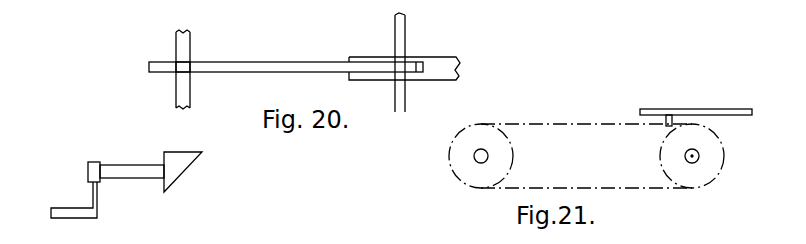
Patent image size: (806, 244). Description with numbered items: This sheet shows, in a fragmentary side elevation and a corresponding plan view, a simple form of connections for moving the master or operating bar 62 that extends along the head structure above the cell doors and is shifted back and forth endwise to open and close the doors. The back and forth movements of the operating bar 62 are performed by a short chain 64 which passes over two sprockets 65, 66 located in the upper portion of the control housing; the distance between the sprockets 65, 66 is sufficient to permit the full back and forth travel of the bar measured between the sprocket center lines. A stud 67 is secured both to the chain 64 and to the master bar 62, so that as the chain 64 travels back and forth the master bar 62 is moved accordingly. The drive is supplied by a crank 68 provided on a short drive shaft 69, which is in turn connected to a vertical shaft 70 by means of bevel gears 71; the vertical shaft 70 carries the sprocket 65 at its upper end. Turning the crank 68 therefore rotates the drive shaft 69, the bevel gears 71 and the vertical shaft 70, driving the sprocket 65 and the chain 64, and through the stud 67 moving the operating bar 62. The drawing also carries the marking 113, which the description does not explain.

In FIG. 20, the master or operating bar 62 is at (445, 68).
In FIG. 21, the master or operating bar 62 is at (725, 108).
In FIG. 20, the short chain 64 is at (279, 68).
In FIG. 21, the short chain 64 is at (572, 122).
In FIG. 20, the sprocket 65 is at (152, 61).
In FIG. 21, the sprocket 65 is at (479, 178).
In FIG. 20, the sprocket 66 is at (413, 64).
In FIG. 21, the sprocket 66 is at (704, 174).
In FIG. 21, the stud 67 is at (668, 125).
In FIG. 20, the crank 68 is at (70, 216).
In FIG. 20, the short drive shaft 69 is at (132, 171).
In FIG. 20, the vertical shaft 70 is at (178, 95).
In FIG. 21, the vertical shaft 70 is at (478, 157).
In FIG. 20, the bevel gears 71 is at (191, 175).
In FIG. 20, the element 113 is at (212, 235).